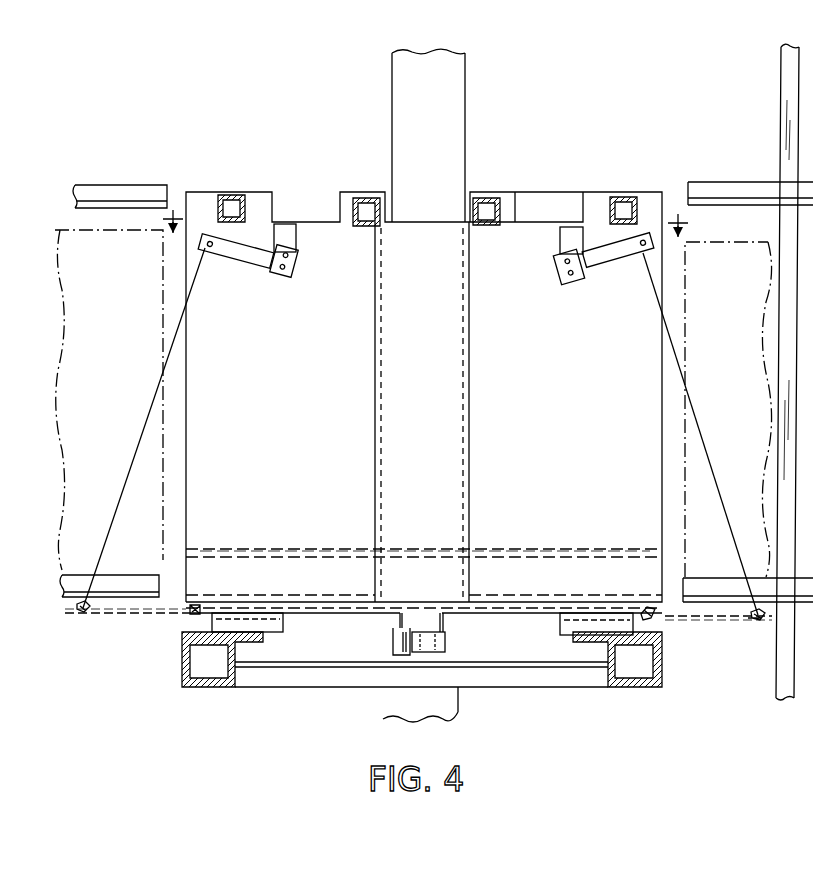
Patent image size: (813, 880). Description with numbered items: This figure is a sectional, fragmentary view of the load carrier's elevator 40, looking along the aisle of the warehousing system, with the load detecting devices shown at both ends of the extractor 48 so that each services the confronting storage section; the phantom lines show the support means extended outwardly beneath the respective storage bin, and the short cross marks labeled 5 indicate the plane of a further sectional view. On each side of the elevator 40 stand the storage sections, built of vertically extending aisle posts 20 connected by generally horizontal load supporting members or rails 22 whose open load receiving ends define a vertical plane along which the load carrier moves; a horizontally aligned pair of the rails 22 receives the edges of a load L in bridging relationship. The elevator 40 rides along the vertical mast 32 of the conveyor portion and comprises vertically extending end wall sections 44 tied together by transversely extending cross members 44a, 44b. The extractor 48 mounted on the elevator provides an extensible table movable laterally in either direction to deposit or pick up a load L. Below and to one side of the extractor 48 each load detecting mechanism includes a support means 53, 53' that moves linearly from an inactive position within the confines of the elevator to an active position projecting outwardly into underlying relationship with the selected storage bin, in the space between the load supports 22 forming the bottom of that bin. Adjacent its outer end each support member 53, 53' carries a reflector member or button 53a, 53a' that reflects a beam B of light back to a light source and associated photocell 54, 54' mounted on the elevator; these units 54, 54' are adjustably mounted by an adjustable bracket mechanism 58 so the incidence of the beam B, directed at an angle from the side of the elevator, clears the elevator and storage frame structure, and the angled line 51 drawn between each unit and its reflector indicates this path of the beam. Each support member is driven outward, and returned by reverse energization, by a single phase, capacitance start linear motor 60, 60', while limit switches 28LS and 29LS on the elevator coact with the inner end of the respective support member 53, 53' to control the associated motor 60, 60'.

The aisle posts 20 is at (788, 95).
The load supporting members or rails 22 is at (141, 195).
The vertical mast 32 is at (455, 128).
The elevator 40 is at (652, 190).
The end wall sections 44 is at (526, 238).
The cross members 44a is at (235, 194).
The cross members 44b is at (216, 686).
The extractor 48 is at (503, 552).
The cable 51 is at (225, 262).
The support means 53 is at (709, 640).
The support means 53' is at (132, 636).
The reflector member or button 53a is at (674, 602).
The reflector member or button 53a' is at (68, 634).
The light source and associated photocell 54 is at (607, 262).
The light source and associated photocell 54' is at (247, 270).
The adjustable bracket mechanism 58 is at (296, 270).
The linear motor 60 is at (596, 669).
The linear motor 60' is at (271, 636).
The limit switch 28LS is at (407, 650).
The limit switch 29LS is at (440, 636).
The beam of light B is at (151, 405).
The load L is at (83, 263).
The section line 5- 5 is at (425, 237).